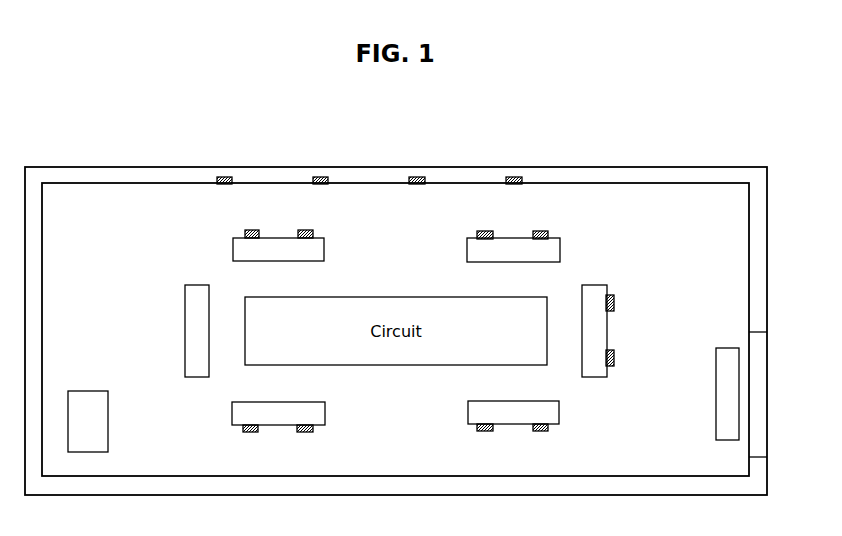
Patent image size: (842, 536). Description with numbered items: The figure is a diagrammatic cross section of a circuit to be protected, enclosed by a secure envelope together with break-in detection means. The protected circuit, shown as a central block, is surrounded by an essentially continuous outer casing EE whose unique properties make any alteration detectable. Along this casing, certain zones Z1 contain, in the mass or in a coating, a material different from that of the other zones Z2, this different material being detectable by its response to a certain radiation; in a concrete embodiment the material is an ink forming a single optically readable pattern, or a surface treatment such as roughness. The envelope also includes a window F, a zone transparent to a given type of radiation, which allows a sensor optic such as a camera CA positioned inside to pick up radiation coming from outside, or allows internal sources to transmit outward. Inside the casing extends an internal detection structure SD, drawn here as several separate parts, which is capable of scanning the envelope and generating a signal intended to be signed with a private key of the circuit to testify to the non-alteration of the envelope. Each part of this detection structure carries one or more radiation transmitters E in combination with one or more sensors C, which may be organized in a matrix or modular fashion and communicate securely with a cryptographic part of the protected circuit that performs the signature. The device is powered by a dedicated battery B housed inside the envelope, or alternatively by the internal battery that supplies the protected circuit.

The outer casing EE is at (396, 162).
The window F is at (756, 397).
The zone Z1 is at (228, 184).
The other zone Z2 is at (452, 183).
The internal detection structure SD is at (237, 252).
The radiation transmitter E is at (251, 230).
The sensor C is at (312, 235).
The dedicated battery B is at (98, 419).
The camera CA is at (726, 395).